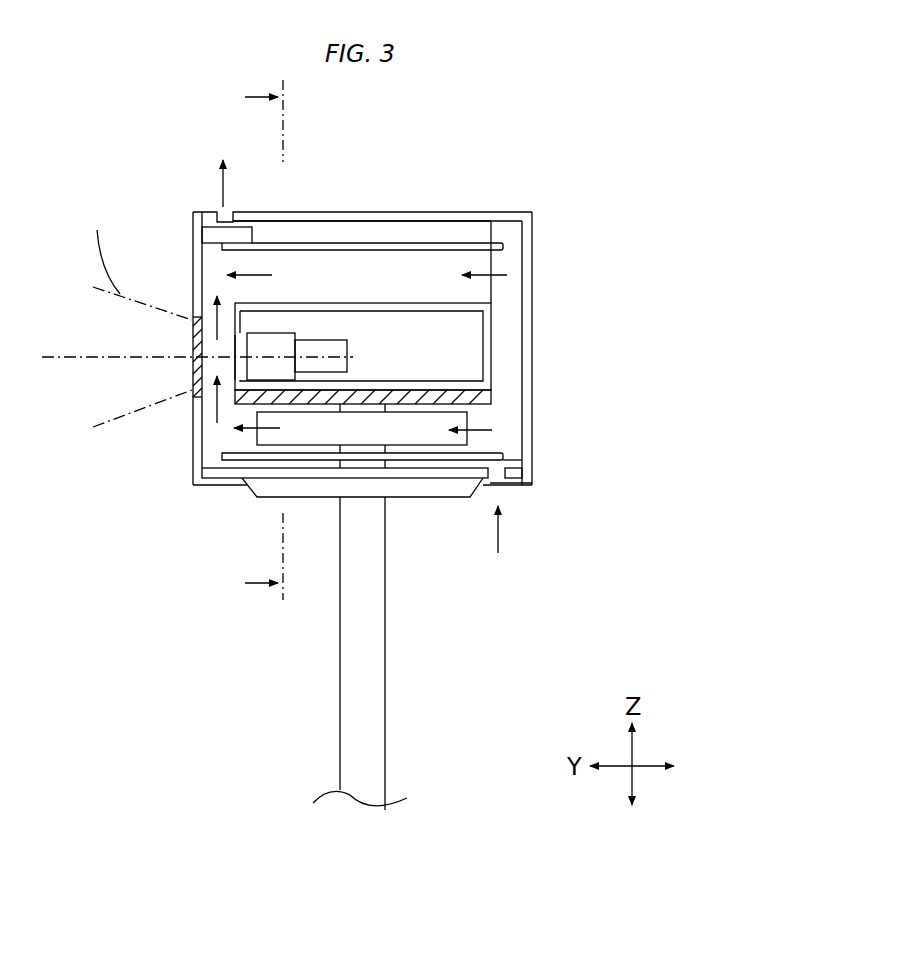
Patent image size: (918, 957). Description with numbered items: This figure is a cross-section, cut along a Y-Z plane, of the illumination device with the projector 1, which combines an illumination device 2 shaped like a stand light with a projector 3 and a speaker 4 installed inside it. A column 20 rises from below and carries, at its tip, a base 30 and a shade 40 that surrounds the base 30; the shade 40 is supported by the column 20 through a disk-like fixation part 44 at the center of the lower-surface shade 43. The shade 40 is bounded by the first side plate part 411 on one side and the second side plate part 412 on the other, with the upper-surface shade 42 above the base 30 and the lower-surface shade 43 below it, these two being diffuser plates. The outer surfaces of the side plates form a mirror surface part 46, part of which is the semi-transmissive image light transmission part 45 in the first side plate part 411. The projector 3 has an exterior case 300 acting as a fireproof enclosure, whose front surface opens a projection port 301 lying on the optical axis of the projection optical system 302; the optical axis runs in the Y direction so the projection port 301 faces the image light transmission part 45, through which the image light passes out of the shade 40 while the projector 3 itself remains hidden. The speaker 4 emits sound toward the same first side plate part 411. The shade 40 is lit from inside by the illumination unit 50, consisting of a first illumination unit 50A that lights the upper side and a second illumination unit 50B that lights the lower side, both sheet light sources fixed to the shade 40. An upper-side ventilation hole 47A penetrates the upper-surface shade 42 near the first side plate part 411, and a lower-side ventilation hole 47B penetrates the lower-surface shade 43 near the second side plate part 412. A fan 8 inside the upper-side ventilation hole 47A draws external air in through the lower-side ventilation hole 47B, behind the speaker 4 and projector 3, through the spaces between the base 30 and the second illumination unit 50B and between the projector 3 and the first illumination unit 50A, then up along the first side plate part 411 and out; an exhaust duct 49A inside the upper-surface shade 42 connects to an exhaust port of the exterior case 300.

The illumination device with the projector 1 is at (105, 153).
The illumination device 2 is at (545, 470).
The projector 3 is at (498, 363).
The speaker 4 is at (475, 418).
The fan 8 is at (203, 235).
The column 20 is at (385, 685).
The base 30 is at (492, 393).
The shade 40 is at (545, 220).
The upper-surface shade 42 is at (467, 212).
The lower-surface shade 43 is at (217, 472).
The fixation part 44 is at (245, 483).
The image light transmission part 45 is at (192, 345).
The mirror surface part 46 is at (193, 430).
The upper-side ventilation hole 47A is at (228, 212).
The lower-side ventilation hole 47B is at (505, 478).
The exhaust duct 49A is at (492, 230).
The illumination unit 50 is at (700, 245).
The first illumination unit 50A is at (503, 243).
The second illumination unit 50B is at (505, 456).
The exterior case 300 is at (492, 340).
The projection port 301 is at (235, 362).
The projection optical system 302 is at (327, 338).
The first side plate part 411 is at (192, 462).
The second side plate part 412 is at (533, 292).